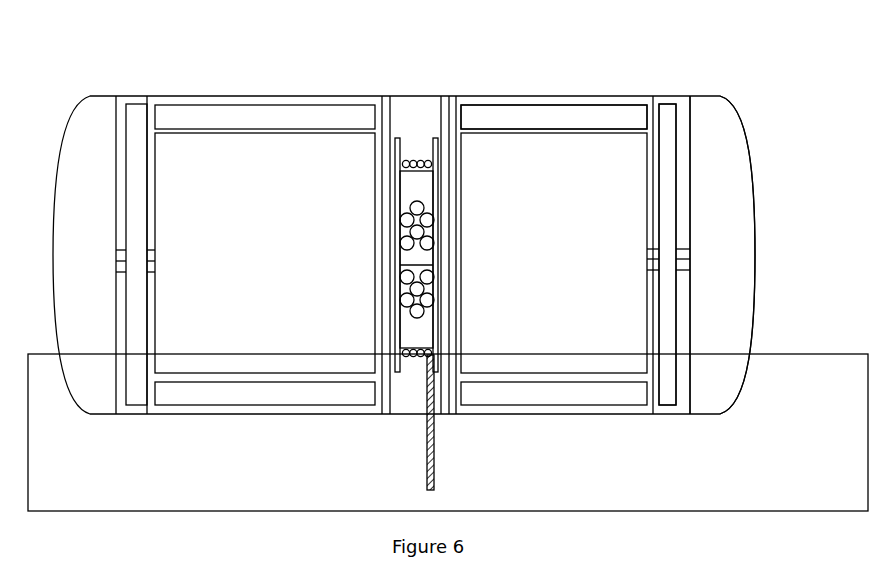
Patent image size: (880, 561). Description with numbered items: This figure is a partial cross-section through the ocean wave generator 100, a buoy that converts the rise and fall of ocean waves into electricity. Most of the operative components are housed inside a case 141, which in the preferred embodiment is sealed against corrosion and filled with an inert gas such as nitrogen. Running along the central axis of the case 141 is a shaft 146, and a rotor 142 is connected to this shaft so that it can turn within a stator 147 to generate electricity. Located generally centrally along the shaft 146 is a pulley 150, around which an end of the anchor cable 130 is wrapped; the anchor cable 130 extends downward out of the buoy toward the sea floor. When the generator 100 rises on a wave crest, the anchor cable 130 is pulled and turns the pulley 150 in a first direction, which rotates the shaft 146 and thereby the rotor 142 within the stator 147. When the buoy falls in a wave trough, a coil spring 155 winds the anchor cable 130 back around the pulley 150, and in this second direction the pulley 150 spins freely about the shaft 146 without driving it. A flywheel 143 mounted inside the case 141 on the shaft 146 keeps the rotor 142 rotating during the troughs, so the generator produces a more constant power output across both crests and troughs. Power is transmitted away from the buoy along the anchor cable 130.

The ocean wave generator 100 is at (750, 156).
The anchor cable 130 is at (434, 460).
The case 141 is at (755, 254).
The rotor 142 is at (625, 216).
The flywheel 143 is at (670, 317).
The shaft 146 is at (688, 254).
The stator 147 is at (612, 120).
The pulley 150 is at (436, 130).
The coil spring 155 is at (418, 207).